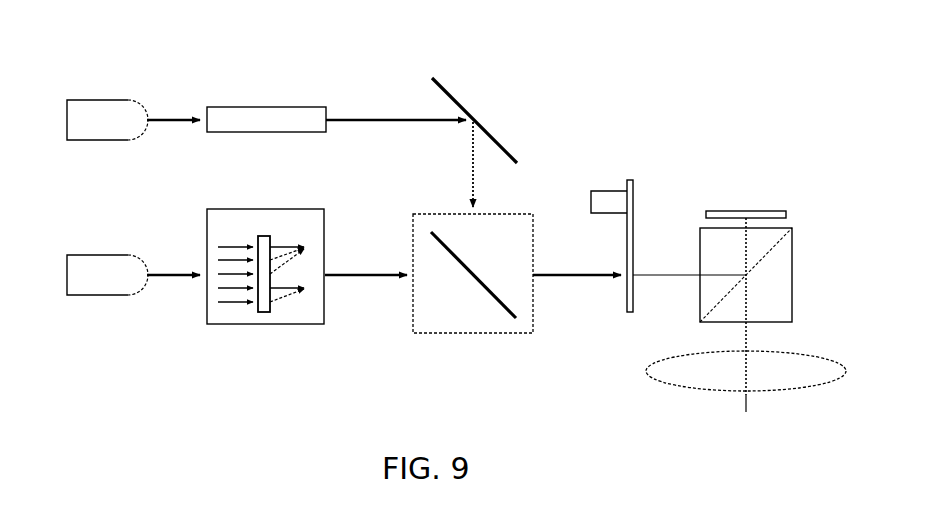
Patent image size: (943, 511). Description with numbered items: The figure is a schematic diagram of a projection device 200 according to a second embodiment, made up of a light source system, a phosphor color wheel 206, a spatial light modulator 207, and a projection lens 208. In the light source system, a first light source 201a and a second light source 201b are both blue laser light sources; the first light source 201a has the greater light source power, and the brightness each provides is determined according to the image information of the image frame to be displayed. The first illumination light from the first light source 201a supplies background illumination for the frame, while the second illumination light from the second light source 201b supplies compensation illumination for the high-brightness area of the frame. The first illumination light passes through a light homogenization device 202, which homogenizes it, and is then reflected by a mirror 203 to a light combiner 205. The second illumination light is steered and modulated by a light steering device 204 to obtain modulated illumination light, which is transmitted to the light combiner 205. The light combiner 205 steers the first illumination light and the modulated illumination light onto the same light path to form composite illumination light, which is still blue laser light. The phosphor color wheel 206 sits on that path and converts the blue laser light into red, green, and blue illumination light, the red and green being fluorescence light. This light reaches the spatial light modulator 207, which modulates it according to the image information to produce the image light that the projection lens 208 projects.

The projection device 200 is at (678, 99).
The first light source 201a is at (97, 97).
The second light source 201b is at (97, 253).
The light homogenization device 202 is at (268, 106).
The mirror 203 is at (446, 85).
The light steering device 204 is at (265, 327).
The light combiner 205 is at (468, 335).
The phosphor color wheel 206 is at (636, 222).
The spatial light modulator 207 is at (758, 208).
The projection lens 208 is at (819, 358).